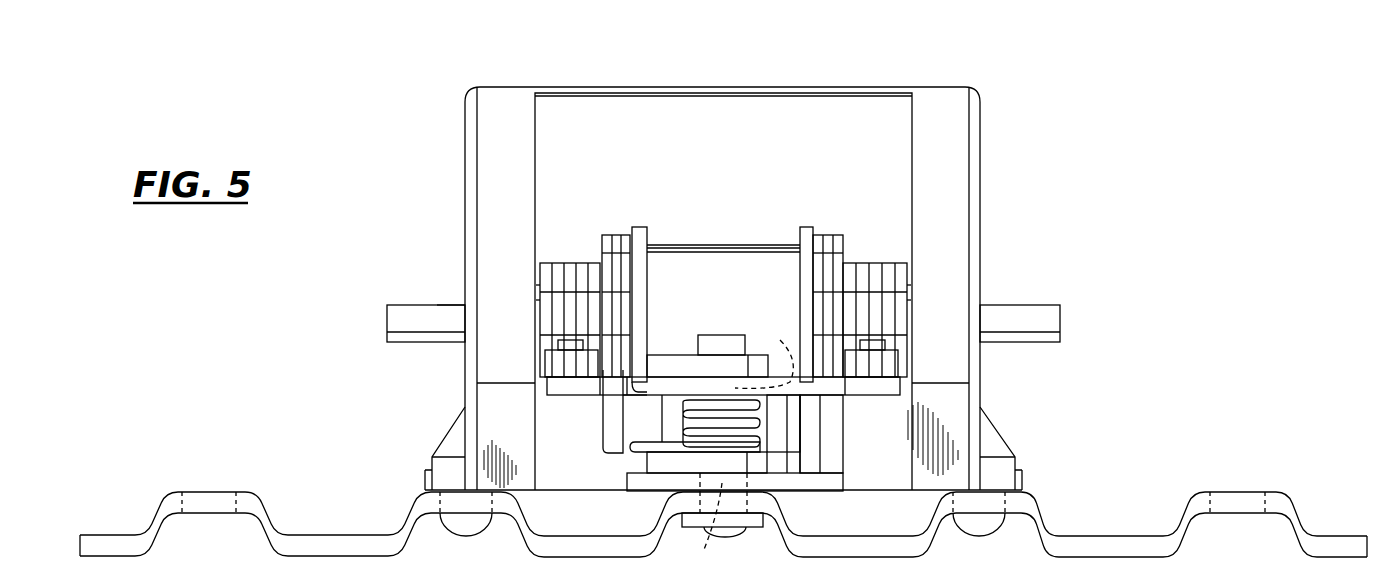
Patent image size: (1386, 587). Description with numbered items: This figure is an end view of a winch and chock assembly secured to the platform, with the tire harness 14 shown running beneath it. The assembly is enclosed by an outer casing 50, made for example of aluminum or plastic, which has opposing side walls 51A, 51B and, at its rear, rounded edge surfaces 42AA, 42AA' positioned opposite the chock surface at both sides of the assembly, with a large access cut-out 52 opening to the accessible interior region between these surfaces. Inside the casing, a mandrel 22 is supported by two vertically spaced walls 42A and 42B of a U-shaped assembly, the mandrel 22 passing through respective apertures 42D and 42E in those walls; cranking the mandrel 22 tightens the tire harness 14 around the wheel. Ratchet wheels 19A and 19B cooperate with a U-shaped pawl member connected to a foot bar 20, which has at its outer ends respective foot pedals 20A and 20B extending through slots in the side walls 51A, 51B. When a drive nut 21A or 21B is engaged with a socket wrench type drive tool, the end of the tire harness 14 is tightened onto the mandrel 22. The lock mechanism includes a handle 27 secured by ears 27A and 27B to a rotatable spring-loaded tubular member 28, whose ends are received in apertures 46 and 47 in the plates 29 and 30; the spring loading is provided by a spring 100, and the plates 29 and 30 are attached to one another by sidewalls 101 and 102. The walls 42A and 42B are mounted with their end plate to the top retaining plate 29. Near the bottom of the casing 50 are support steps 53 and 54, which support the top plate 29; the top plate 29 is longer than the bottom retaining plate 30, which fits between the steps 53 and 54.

The tire harness 14 is at (723, 539).
The casing 50 is at (982, 130).
The side wall 51A is at (465, 142).
The side wall 51B is at (973, 173).
The access cut-out 52 is at (848, 125).
The rounded edge surface 42AA' is at (449, 271).
The rounded edge surface 42AA is at (1037, 286).
The foot bar 20 is at (437, 305).
The foot pedal 20A is at (398, 318).
The foot pedal 20B is at (1030, 312).
The drive nut 21A is at (588, 260).
The drive nut 21B is at (877, 260).
The ratchet wheel 19A is at (617, 240).
The ratchet wheel 19B is at (828, 240).
The wall 42A is at (643, 233).
The wall 42B is at (805, 233).
The aperture 42D is at (680, 283).
The aperture 42E is at (797, 257).
The mandrel 22 is at (736, 322).
The tubular member 28 is at (718, 345).
The aperture 46 is at (764, 353).
The ear 27A is at (673, 370).
The plate 29 is at (805, 388).
The handle 27 is at (632, 413).
The ear 27B is at (663, 480).
The spring 100 is at (765, 410).
The sidewall 101 is at (615, 460).
The sidewall 102 is at (806, 440).
The plate 30 is at (797, 483).
The aperture 47 is at (722, 527).
The support step 53 is at (490, 405).
The support step 54 is at (928, 410).